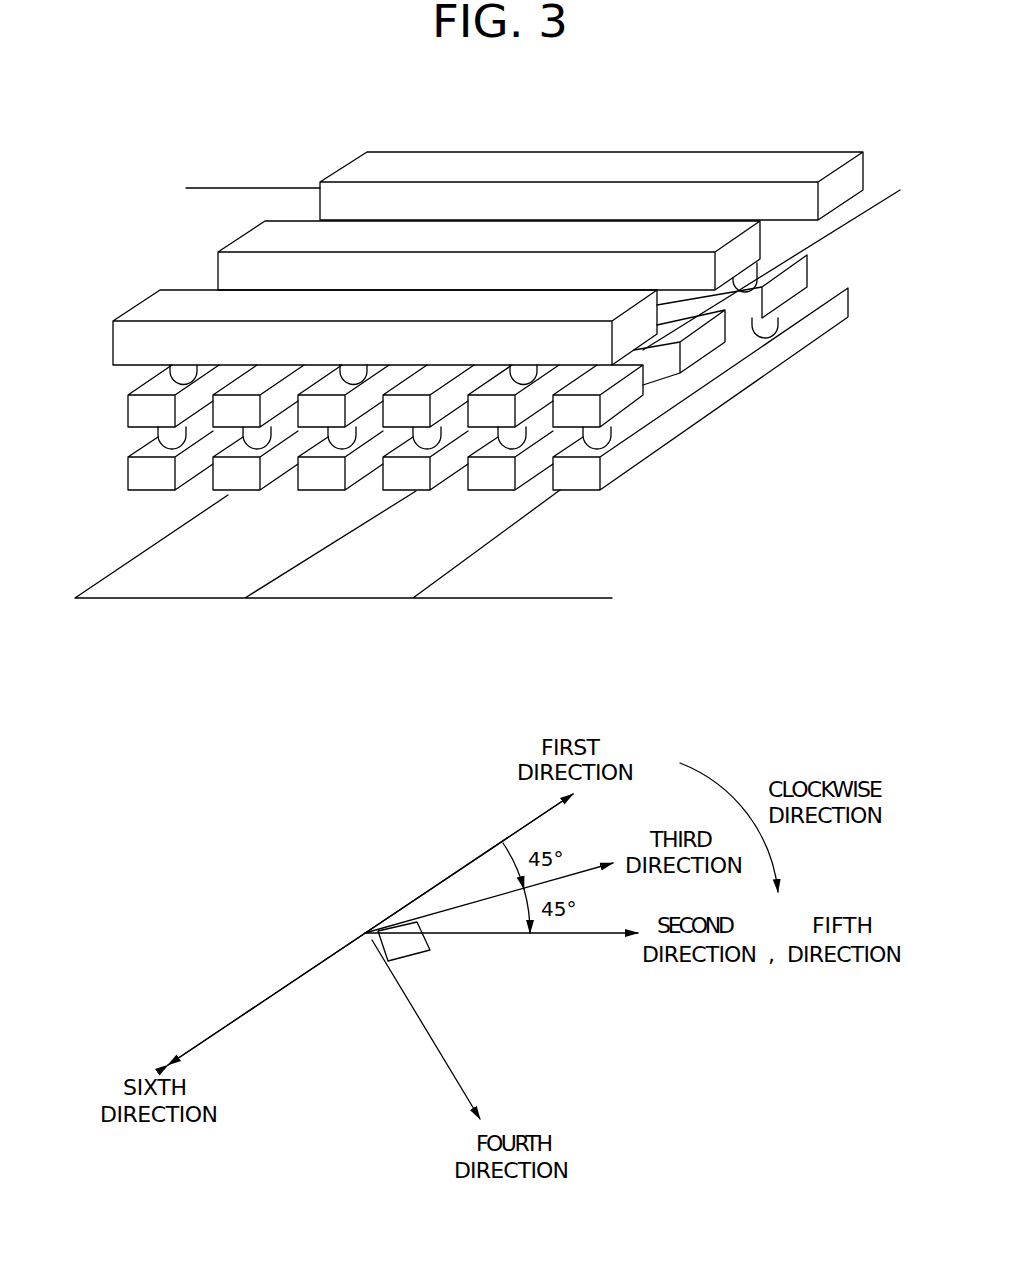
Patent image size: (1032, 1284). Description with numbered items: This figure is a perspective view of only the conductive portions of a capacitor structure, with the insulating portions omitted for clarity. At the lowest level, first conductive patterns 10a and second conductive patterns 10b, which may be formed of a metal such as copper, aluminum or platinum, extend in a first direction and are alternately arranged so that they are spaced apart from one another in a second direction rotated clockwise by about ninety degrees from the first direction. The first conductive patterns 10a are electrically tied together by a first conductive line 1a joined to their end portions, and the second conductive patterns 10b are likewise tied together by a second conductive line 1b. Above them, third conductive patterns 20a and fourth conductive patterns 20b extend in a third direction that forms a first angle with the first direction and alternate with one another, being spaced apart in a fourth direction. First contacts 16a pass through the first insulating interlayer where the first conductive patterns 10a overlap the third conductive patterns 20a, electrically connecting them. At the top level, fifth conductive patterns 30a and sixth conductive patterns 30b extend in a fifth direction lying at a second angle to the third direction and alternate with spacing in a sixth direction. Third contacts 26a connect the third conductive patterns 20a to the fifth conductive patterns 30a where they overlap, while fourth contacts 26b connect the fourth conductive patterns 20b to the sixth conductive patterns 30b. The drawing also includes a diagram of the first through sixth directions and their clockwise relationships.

The first conductive line 1a is at (209, 187).
The second conductive line 1b is at (540, 600).
The first conductive patterns 10a is at (511, 487).
The second conductive patterns 10b is at (596, 487).
The first contacts 16a is at (394, 495).
The third conductive patterns 20a is at (511, 425).
The fourth conductive patterns 20b is at (596, 425).
The third contacts 26a is at (167, 379).
The fourth contacts 26b is at (758, 280).
The fifth conductive patterns 30a is at (821, 200).
The sixth conductive patterns 30b is at (717, 267).